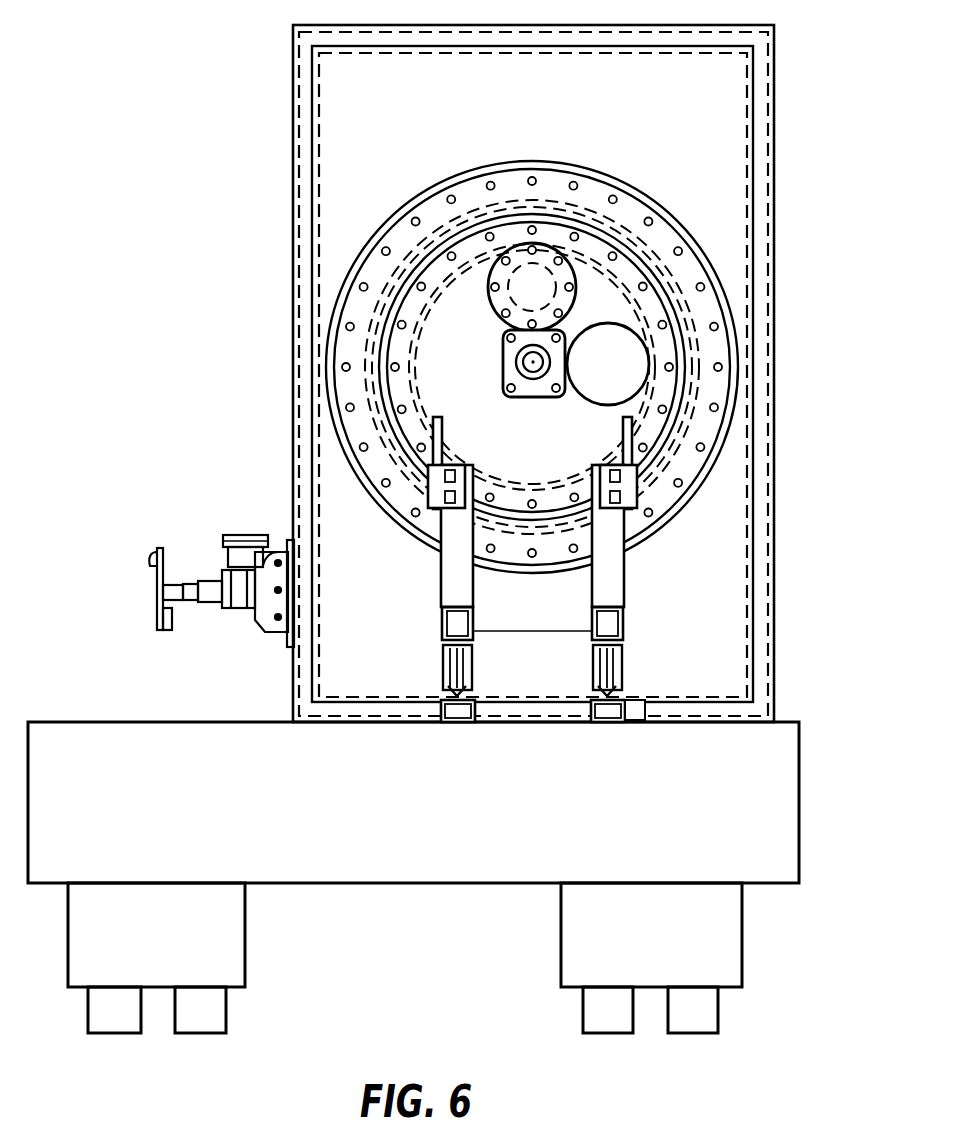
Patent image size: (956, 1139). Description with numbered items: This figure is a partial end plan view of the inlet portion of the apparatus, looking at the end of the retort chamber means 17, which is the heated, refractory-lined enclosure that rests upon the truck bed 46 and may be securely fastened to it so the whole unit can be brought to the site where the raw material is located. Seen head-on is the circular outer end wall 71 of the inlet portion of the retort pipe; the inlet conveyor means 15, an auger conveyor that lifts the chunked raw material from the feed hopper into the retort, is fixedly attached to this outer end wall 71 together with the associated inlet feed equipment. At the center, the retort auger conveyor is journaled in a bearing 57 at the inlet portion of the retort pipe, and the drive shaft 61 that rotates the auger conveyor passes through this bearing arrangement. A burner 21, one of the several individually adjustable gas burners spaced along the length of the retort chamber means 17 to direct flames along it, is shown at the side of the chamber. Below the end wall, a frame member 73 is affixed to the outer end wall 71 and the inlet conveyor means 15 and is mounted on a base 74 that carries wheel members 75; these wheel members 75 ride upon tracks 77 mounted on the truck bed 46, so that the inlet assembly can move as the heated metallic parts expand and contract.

The inlet conveyor means 15 is at (573, 397).
The retort chamber means 17 is at (775, 283).
The burner 21 is at (237, 604).
The truck bed 46 is at (801, 748).
The bearing 57 is at (514, 360).
The drive shaft 61 is at (536, 358).
The outer end wall 71 is at (598, 418).
The frame member 73 is at (613, 573).
The base 74 is at (616, 626).
The wheel member 75 is at (597, 674).
The track 77 is at (618, 694).